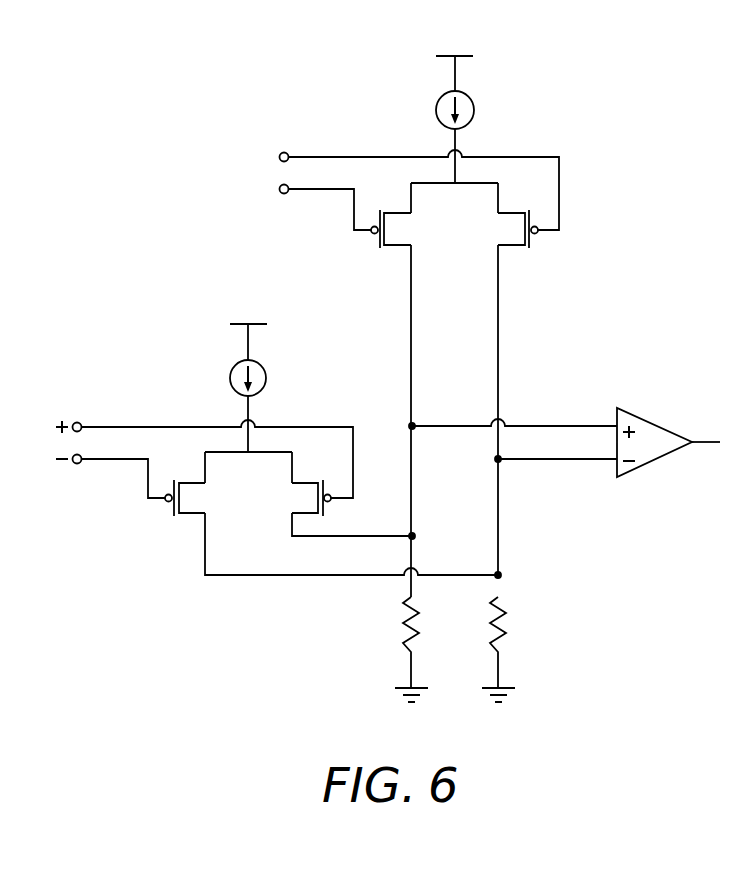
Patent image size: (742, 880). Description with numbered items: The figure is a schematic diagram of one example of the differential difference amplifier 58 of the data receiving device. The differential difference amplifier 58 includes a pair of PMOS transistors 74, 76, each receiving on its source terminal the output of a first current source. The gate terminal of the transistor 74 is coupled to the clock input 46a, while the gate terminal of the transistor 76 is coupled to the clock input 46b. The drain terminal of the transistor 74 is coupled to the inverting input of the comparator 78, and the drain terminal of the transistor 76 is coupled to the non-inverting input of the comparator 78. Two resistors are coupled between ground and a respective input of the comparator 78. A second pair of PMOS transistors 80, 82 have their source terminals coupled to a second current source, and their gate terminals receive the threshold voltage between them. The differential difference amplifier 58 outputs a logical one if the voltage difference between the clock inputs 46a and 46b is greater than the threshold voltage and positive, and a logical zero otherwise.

The differential difference amplifier 58 is at (183, 78).
The clock input 46a is at (396, 187).
The clock input 46b is at (305, 206).
The PMOS transistor 74 is at (512, 247).
The PMOS transistor 76 is at (398, 247).
The comparator 78 is at (655, 420).
The PMOS transistor 80 is at (190, 515).
The PMOS transistor 82 is at (303, 516).